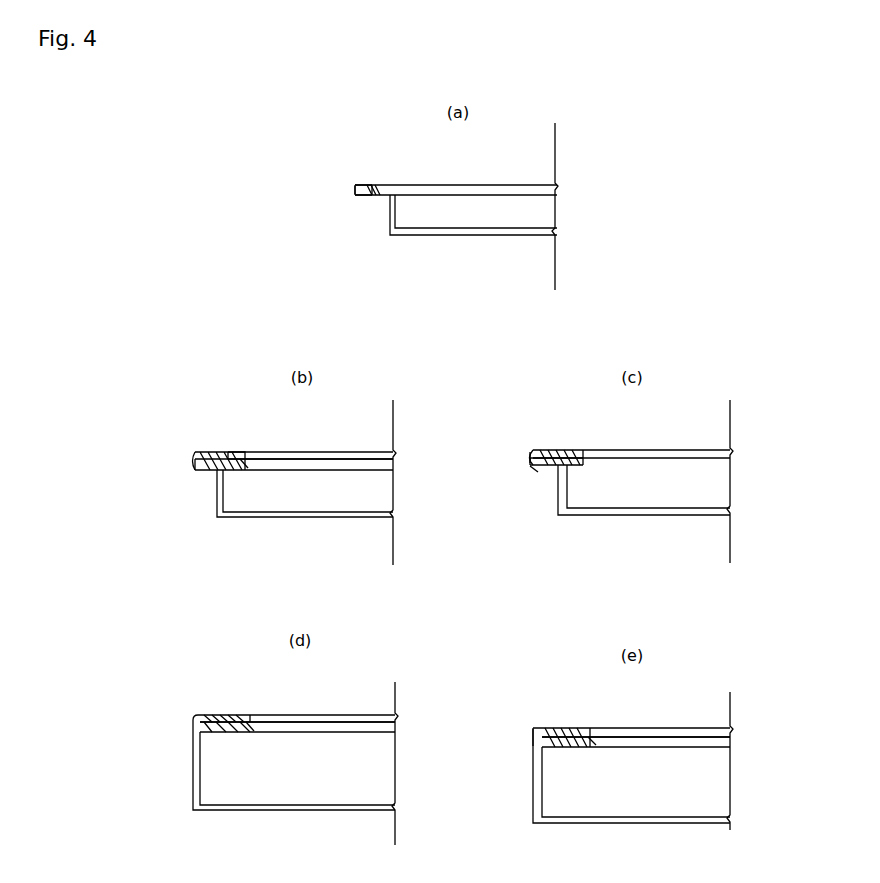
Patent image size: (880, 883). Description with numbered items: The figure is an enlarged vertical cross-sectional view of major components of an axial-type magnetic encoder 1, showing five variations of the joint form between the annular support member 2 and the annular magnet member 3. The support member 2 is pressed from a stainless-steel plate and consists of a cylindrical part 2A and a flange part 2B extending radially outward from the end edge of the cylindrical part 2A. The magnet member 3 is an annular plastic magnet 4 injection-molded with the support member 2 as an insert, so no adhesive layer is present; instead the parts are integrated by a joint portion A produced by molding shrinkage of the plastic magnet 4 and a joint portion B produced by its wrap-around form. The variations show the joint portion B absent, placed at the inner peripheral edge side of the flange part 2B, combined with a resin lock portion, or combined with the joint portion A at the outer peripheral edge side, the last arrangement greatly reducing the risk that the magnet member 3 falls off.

The magnetic encoder 1 is at (471, 183).
The annular support member 2 is at (426, 504).
The cylindrical part 2A is at (389, 225).
The flange part 2B is at (372, 197).
The annular magnet member 3 is at (372, 188).
The plastic magnet 4 is at (392, 435).
The joint portion resulting from molding shrinkage A is at (354, 184).
The joint portion resulting from wrap-around form B is at (246, 465).